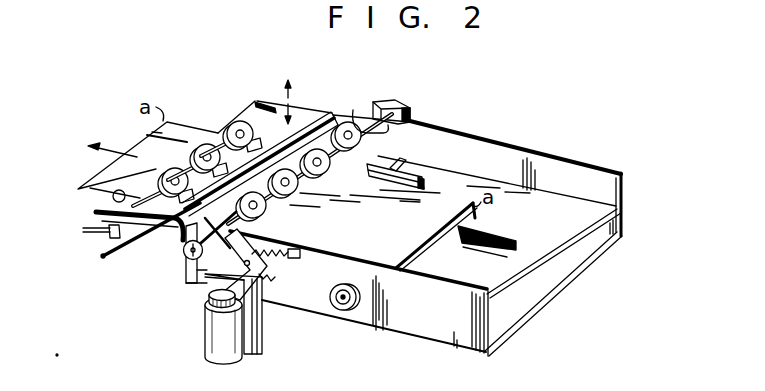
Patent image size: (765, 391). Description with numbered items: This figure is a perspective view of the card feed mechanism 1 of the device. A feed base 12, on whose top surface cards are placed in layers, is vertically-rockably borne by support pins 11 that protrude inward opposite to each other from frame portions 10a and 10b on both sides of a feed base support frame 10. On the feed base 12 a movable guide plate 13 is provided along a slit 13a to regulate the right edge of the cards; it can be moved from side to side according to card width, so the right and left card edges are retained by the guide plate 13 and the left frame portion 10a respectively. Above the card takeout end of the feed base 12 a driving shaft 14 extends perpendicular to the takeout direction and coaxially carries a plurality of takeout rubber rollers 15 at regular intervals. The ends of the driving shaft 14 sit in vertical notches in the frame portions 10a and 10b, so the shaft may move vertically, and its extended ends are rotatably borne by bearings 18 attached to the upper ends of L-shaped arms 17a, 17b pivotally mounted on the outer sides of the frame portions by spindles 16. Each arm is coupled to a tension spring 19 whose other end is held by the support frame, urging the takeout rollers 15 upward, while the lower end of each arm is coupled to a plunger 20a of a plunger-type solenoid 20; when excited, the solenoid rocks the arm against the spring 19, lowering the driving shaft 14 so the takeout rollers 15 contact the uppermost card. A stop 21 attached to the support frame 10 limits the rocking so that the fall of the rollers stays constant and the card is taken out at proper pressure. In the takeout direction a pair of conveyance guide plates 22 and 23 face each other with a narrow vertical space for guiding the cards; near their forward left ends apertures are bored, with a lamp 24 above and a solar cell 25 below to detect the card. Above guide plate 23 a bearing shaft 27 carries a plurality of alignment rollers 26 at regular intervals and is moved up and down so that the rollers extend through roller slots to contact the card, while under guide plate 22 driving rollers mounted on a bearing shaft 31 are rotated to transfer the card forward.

The feed mechanism 1 is at (507, 133).
The feed base support frame 10 is at (624, 221).
The frame portion 10a is at (494, 312).
The frame portion 10b is at (627, 178).
The support pin 11 is at (341, 310).
The feed base 12 is at (548, 270).
The movable guide plate 13 is at (427, 181).
The slit 13a is at (404, 160).
The driving shaft 14 is at (380, 134).
The takeout rubber rollers 15 is at (345, 123).
The spindle 16 is at (268, 277).
The L-shaped arm 17a is at (185, 280).
The L-shaped arm 17b is at (407, 107).
The bearing 18 is at (252, 219).
The tension spring 19 is at (292, 249).
The plunger-type solenoid 20 is at (206, 326).
The plunger 20a is at (261, 326).
The stop 21 is at (266, 284).
The conveyance guide plate 22 is at (170, 240).
The conveyance guide plate 23 is at (255, 101).
The lamp 24 is at (111, 195).
The solar cell 25 is at (108, 228).
The alignment rollers 26 is at (222, 127).
The bearing shaft 27 is at (260, 109).
The bearing shaft 31 is at (150, 244).